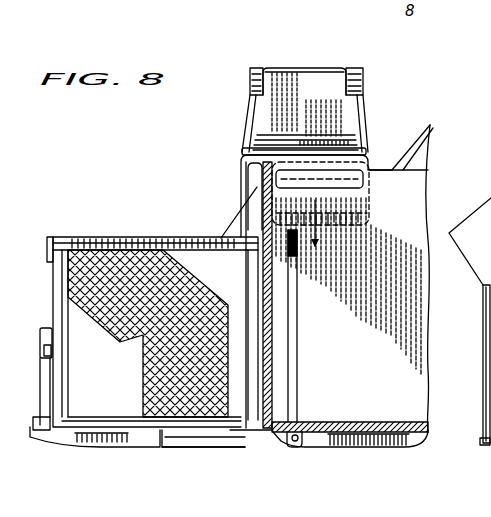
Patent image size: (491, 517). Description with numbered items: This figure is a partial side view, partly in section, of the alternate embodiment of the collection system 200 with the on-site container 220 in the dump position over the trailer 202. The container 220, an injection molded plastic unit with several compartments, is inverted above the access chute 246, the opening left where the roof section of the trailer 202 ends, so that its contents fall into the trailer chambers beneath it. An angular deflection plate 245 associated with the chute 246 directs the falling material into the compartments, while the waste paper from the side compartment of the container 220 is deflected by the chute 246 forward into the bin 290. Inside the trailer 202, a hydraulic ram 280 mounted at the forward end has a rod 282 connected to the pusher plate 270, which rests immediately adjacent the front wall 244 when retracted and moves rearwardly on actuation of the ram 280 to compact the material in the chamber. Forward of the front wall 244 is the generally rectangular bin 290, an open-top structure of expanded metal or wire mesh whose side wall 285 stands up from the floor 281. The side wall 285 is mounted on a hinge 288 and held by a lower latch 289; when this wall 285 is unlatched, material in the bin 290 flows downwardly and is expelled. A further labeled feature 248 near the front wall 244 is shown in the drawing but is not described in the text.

The system 200 is at (386, 90).
The mobile trailer 202 is at (418, 186).
The on-site container 220 is at (306, 75).
The front wall 244 is at (275, 303).
The angular deflection plate 245 is at (430, 124).
The access chute 246 is at (382, 158).
The slot 248 is at (238, 191).
The pusher plate 270 is at (299, 372).
The hydraulic ram 280 is at (233, 395).
The floor 281 is at (181, 418).
The rod 282 is at (310, 440).
The side wall 285 is at (488, 340).
The hinge 288 is at (482, 300).
The lower latch 289 is at (482, 443).
The bin 290 is at (108, 213).